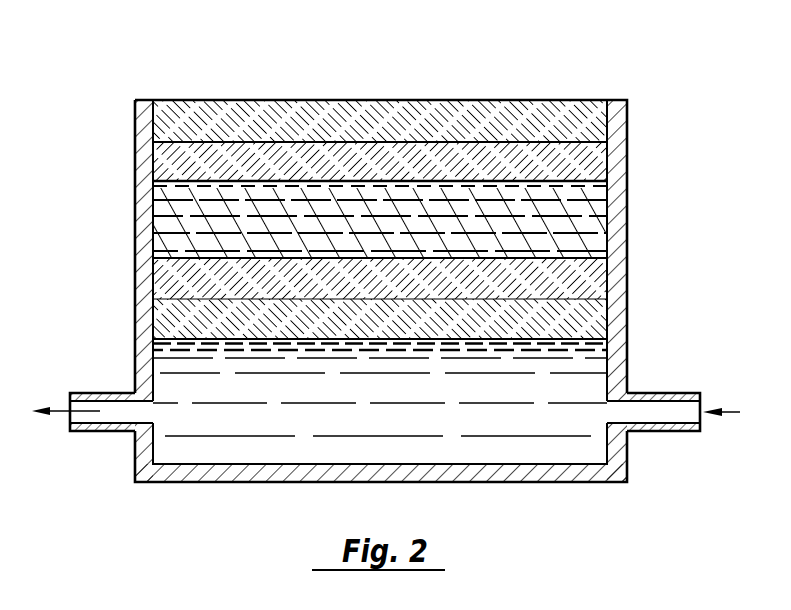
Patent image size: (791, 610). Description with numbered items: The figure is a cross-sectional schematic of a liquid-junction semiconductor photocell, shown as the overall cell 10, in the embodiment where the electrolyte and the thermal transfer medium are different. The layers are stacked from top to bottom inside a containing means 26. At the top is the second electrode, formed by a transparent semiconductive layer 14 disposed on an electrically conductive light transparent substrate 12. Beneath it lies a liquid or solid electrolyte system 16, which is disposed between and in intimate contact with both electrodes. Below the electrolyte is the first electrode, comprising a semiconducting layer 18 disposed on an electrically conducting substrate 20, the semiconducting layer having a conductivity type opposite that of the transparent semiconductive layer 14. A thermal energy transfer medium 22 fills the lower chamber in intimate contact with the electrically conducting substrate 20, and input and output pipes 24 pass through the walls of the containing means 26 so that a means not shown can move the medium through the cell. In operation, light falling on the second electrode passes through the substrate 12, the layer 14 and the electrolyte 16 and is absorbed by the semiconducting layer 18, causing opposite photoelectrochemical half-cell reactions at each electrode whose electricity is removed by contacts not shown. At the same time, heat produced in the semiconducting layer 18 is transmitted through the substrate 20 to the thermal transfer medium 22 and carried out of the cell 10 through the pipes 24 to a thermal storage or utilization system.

The cell 10 is at (240, 90).
The electrically conductive light transparent substrate 12 is at (567, 108).
The transparent semiconductive layer 14 is at (598, 174).
The electrolyte system 16 is at (595, 233).
The semiconducting layer 18 is at (598, 292).
The electrically conducting substrate 20 is at (598, 330).
The thermal energy transfer medium 22 is at (587, 393).
The input and output pipes 24 is at (120, 432).
The containing means 26 is at (137, 212).